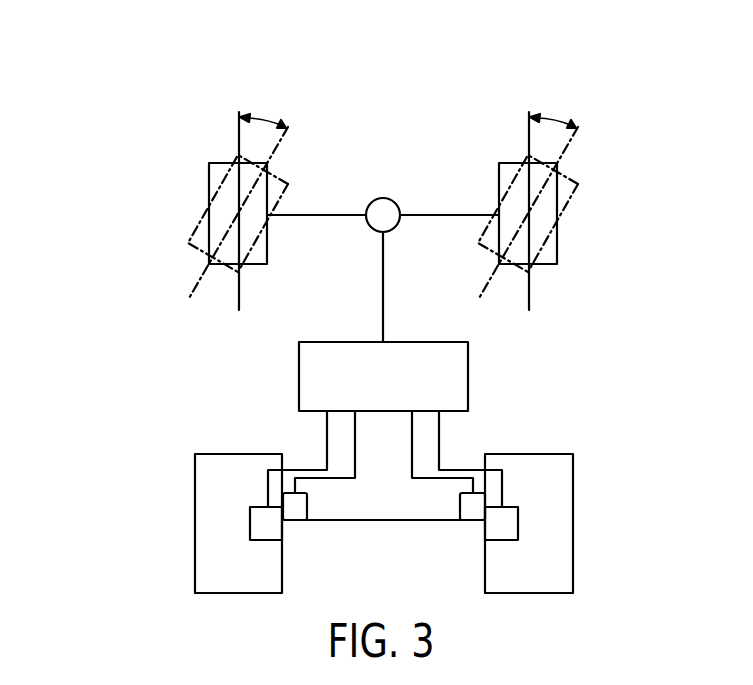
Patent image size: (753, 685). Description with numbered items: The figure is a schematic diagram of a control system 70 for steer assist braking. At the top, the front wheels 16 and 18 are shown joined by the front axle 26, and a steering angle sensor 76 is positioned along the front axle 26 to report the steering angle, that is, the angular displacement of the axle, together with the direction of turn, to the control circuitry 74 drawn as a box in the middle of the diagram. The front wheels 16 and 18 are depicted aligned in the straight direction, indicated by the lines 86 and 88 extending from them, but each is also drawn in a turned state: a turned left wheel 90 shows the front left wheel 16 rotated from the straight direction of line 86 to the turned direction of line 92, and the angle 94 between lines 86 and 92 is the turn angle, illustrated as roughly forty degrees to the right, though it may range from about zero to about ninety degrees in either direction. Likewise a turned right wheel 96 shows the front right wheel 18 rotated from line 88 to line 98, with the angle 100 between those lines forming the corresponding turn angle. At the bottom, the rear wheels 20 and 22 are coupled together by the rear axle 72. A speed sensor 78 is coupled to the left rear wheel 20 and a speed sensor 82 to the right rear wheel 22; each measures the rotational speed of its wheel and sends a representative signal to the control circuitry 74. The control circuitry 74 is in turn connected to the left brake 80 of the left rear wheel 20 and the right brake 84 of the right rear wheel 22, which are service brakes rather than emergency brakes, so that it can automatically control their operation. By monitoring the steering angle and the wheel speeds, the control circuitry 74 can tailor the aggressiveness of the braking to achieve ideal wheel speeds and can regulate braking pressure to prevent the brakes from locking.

The control system 70 is at (124, 86).
The front left wheel 16 is at (209, 183).
The front right wheel 18 is at (499, 183).
The line 86 is at (239, 136).
The line 88 is at (529, 136).
The angle 94 is at (287, 126).
The angle 100 is at (577, 126).
The line 92 is at (188, 272).
The line 98 is at (478, 272).
The turned left wheel 90 is at (279, 258).
The turned right wheel 96 is at (569, 258).
The steering angle sensor 76 is at (372, 202).
The front axle 26 is at (424, 214).
The control circuitry 74 is at (299, 376).
The left rear wheel 20 is at (195, 521).
The right rear wheel 22 is at (573, 522).
The left brake 80 is at (265, 541).
The right brake 84 is at (503, 541).
The speed sensor 78 is at (294, 522).
The speed sensor 82 is at (473, 522).
The rear axle 72 is at (383, 522).